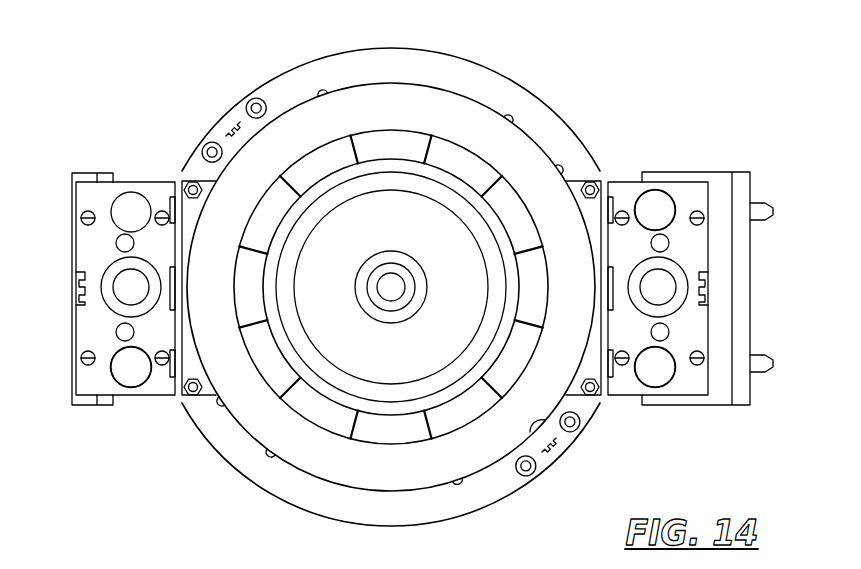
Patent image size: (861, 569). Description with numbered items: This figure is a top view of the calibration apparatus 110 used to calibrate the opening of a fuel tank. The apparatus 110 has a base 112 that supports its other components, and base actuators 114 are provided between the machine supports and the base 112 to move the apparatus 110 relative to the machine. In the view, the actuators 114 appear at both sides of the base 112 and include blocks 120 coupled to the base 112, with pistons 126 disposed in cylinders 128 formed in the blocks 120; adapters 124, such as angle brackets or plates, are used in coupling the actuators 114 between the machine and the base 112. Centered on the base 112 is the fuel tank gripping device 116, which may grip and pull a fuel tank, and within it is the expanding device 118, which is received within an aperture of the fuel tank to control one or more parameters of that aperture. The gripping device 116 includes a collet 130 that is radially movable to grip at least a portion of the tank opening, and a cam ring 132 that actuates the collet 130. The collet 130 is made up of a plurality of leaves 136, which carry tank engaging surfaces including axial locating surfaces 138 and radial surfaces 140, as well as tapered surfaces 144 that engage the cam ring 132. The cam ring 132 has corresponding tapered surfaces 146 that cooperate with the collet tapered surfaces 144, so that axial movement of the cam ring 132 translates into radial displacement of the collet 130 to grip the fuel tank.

The calibration apparatus 110 is at (198, 66).
The base 112 is at (375, 521).
The base actuators 114 is at (66, 334).
The fuel tank gripping device 116 is at (305, 478).
The expanding device 118 is at (372, 238).
The blocks 120 is at (85, 249).
The adapters 124 is at (82, 177).
The pistons 126 is at (140, 368).
The cylinders 128 is at (112, 212).
The collet 130 is at (368, 120).
The cam ring 132 is at (375, 484).
The leaves 136 is at (456, 133).
The axial locating surfaces 138 is at (462, 162).
The radial surfaces 140 is at (512, 200).
The tapered surfaces 144 is at (318, 148).
The tapered surfaces 146 is at (318, 150).